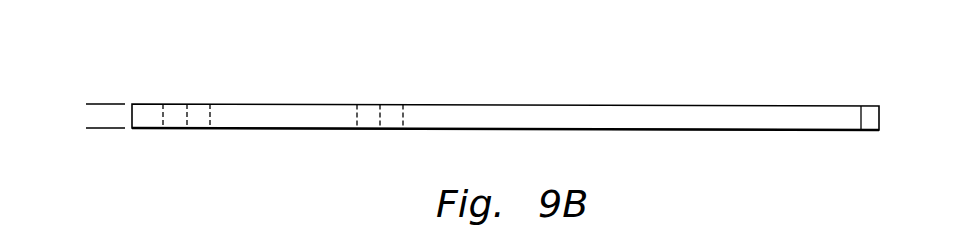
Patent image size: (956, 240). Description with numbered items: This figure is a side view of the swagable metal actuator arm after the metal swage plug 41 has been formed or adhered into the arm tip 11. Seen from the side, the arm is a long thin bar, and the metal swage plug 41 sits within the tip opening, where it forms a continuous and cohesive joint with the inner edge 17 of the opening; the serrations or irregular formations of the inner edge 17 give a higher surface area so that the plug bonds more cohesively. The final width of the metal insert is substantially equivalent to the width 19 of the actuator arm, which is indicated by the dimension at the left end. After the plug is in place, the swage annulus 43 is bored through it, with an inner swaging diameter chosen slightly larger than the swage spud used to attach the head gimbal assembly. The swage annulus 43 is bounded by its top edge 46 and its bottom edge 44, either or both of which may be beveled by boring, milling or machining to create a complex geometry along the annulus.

The arm tip 11 is at (725, 95).
The width of the actuator arm 19 is at (102, 63).
The top edge 46 is at (173, 93).
The bottom edge 44 is at (178, 139).
The swage annulus 43 is at (357, 117).
The inner edge 17 is at (400, 118).
The metal swage plug 41 is at (400, 90).